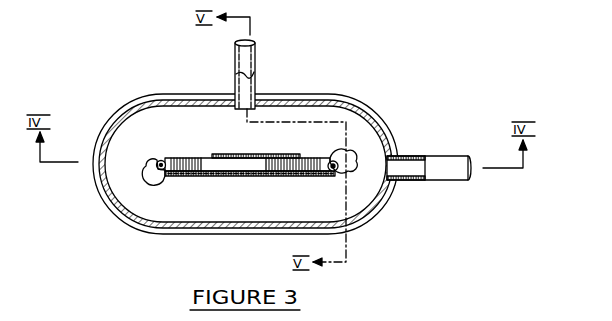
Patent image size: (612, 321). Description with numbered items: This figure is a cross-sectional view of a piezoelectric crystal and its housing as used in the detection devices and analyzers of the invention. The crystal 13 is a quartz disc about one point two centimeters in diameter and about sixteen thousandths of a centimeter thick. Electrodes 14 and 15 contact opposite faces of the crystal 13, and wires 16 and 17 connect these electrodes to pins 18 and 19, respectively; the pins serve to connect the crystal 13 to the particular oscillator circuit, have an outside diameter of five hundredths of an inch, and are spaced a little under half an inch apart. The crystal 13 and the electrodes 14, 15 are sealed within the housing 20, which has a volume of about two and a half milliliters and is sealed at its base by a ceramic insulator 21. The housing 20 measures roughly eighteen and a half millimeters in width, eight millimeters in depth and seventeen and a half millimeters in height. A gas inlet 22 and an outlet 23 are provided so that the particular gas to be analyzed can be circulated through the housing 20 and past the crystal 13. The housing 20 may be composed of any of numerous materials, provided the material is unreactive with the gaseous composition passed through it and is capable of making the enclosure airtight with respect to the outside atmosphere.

The crystal 13 is at (185, 158).
The electrode 14 is at (226, 177).
The electrode 15 is at (243, 155).
The wire 16 is at (146, 179).
The wire 17 is at (356, 161).
The pin 18 is at (159, 160).
The pin 19 is at (334, 172).
The housing 20 is at (352, 106).
The ceramic insulator 21 is at (390, 130).
The gas inlet 22 is at (440, 157).
The outlet 23 is at (256, 59).